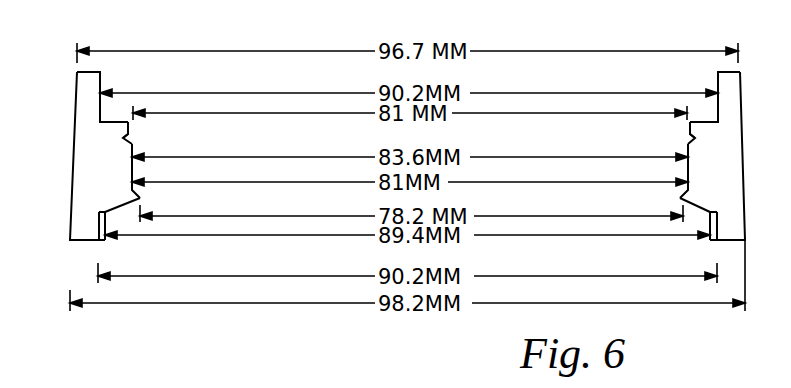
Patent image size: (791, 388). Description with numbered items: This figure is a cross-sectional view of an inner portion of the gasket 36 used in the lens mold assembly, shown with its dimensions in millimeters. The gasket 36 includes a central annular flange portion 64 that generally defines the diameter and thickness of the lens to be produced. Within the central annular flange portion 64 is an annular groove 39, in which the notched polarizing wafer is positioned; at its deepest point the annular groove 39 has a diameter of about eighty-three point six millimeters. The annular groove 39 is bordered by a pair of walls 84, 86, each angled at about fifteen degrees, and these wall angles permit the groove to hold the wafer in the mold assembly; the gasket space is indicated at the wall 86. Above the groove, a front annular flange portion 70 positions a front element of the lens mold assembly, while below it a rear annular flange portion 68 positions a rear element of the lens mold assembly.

The gasket 36 is at (65, 165).
The front annular flange portion 70 is at (100, 79).
The annular groove 39 is at (135, 130).
The wall 86 is at (123, 129).
The wall 84 is at (126, 150).
The central annular flange portion 64 is at (134, 172).
The rear annular flange portion 68 is at (105, 238).